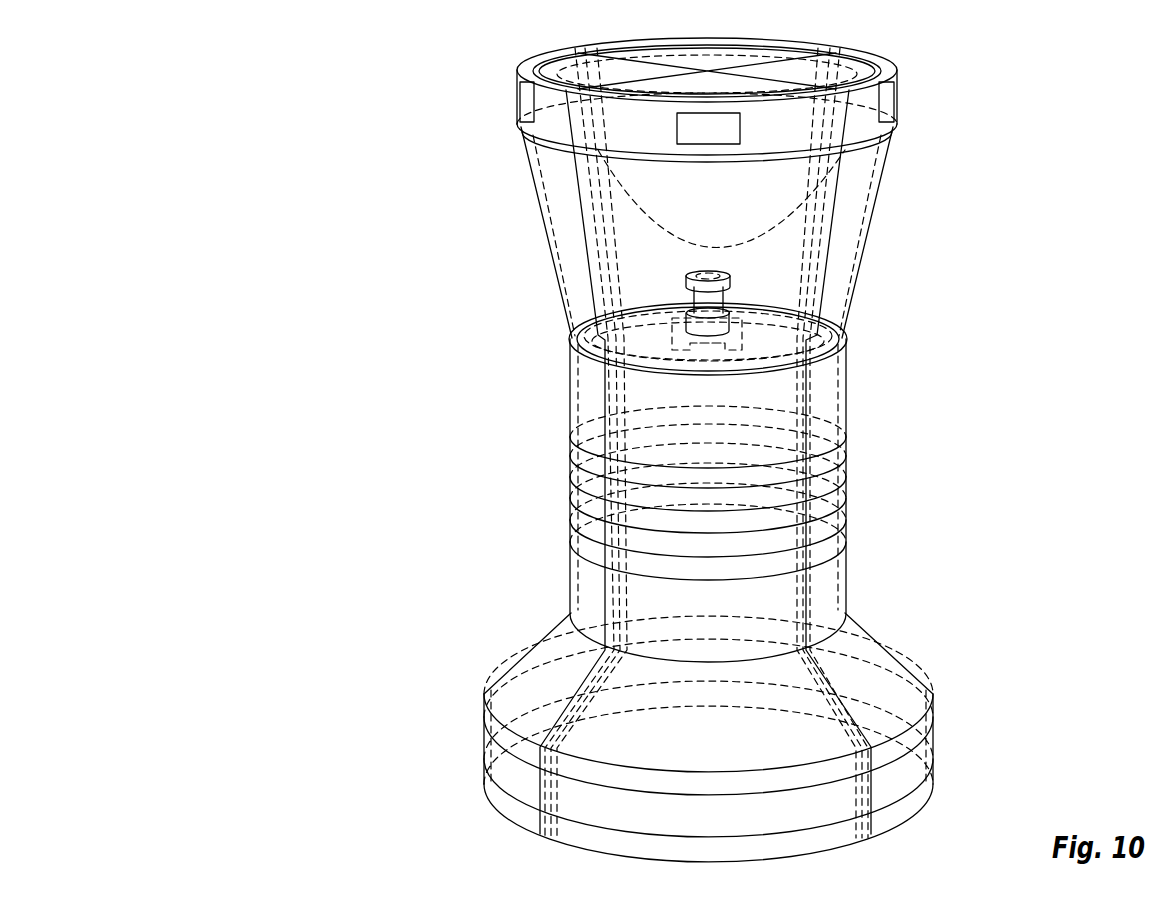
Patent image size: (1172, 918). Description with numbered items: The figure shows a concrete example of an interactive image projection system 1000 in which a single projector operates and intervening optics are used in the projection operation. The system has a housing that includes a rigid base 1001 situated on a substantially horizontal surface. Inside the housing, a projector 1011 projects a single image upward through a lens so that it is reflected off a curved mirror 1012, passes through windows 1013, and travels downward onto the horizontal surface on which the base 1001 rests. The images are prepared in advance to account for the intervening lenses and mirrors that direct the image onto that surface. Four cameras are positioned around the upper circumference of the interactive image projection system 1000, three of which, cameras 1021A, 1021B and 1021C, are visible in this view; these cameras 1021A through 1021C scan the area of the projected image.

The interactive image projection system 1000 is at (218, 66).
The rigid base 1001 is at (933, 731).
The projector 1011 is at (727, 287).
The curved mirror 1012 is at (752, 238).
The windows 1013 is at (557, 228).
The camera 1021A is at (741, 120).
The camera 1021B is at (518, 103).
The camera 1021C is at (896, 94).